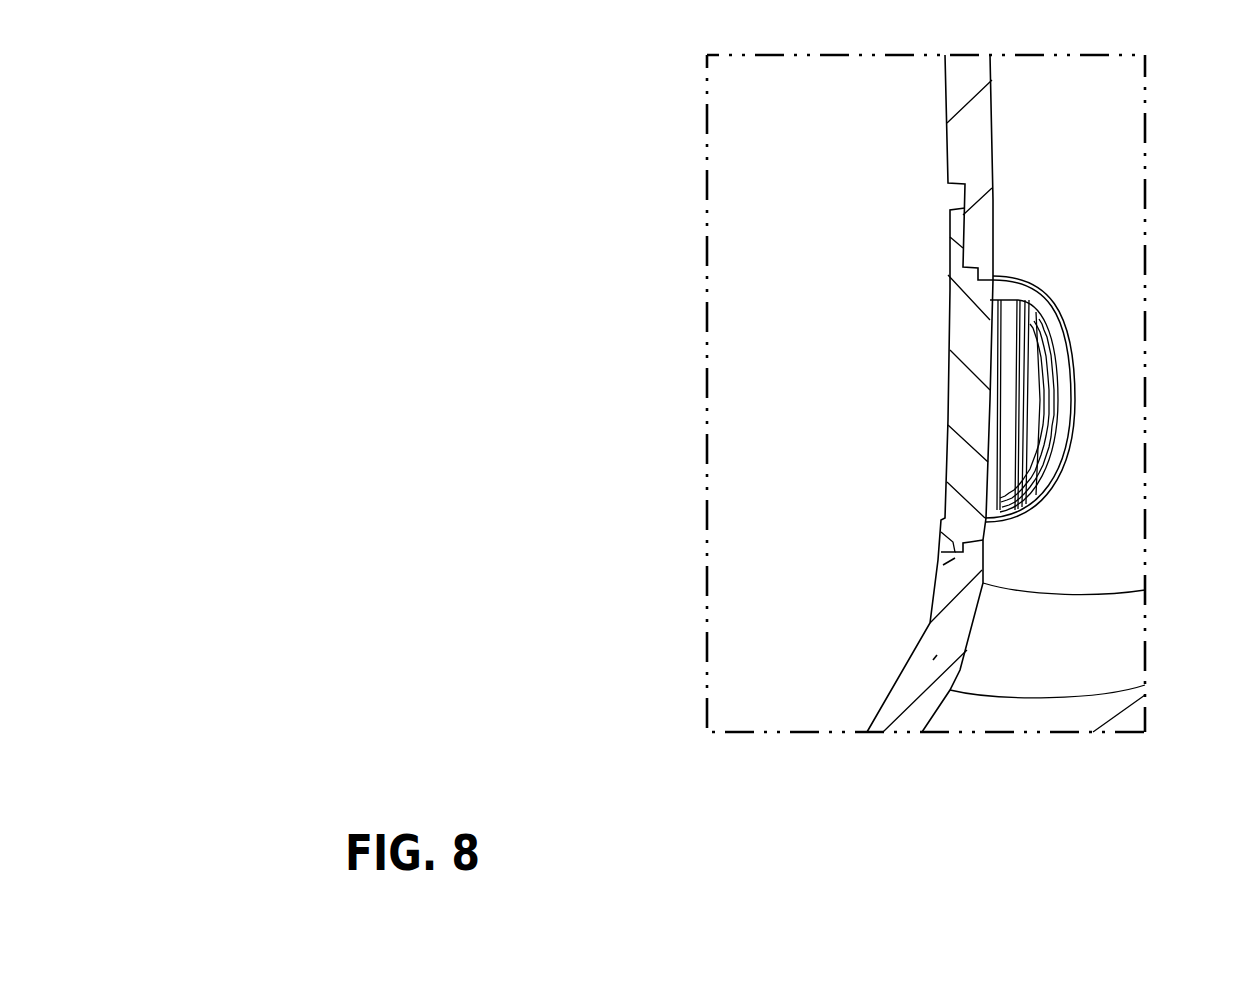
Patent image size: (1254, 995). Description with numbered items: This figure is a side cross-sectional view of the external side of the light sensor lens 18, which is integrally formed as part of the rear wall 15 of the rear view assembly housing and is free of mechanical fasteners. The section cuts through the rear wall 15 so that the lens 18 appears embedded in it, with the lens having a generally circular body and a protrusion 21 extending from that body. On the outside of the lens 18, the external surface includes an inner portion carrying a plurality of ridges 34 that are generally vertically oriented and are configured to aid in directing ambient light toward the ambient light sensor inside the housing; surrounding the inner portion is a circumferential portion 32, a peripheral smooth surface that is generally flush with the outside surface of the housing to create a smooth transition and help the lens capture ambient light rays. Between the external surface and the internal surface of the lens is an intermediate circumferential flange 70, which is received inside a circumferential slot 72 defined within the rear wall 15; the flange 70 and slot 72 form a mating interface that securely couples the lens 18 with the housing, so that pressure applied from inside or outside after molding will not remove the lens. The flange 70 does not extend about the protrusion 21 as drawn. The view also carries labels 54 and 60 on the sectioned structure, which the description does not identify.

The rear wall 15 is at (935, 657).
The light sensor lens 18 is at (1027, 470).
The protrusion 21 is at (957, 228).
The circumferential portion 32 is at (1058, 342).
The ridges 34 is at (1040, 403).
The hatched body 54 is at (1027, 302).
The shoulder 60 is at (965, 197).
The circumferential flange 70 is at (948, 562).
The circumferential slot 72 is at (940, 548).